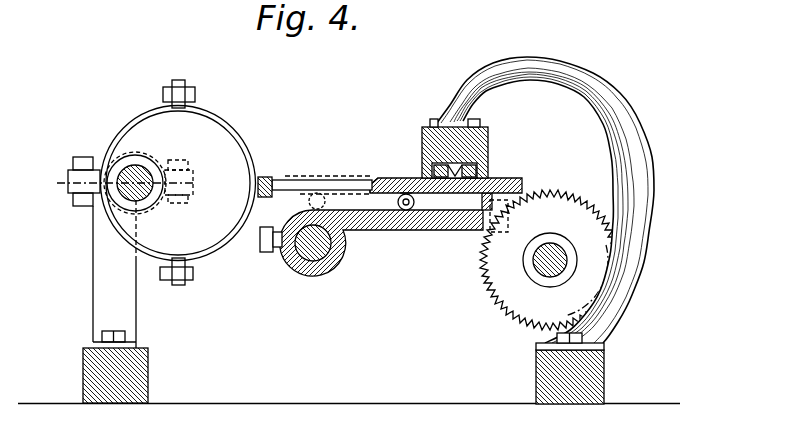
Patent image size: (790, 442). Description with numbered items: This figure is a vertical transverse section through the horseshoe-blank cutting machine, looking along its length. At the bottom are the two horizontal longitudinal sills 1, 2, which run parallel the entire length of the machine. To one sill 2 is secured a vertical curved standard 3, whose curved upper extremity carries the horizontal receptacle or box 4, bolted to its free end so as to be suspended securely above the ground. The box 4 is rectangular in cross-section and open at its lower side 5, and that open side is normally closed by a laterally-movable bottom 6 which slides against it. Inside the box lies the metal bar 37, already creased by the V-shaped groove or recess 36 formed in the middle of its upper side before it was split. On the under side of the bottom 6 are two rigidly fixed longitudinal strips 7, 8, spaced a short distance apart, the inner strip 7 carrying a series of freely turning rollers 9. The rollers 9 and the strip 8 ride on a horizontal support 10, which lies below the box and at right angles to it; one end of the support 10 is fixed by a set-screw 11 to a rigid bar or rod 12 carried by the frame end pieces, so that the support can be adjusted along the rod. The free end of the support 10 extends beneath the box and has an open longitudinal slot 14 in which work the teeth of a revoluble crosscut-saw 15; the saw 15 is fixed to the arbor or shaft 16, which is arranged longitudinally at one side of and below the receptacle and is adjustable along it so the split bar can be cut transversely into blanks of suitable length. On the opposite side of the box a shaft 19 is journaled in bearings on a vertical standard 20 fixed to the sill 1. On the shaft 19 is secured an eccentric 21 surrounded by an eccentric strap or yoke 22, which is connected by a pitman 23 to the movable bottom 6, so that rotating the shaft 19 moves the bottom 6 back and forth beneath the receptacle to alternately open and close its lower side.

The horizontal longitudinal sill 1 is at (83, 378).
The horizontal longitudinal sill 2 is at (536, 375).
The vertical curved standard 3 is at (545, 200).
The receptacle or box 4 is at (422, 134).
The open lower side of the receptacle 5 is at (490, 178).
The laterally-movable bottom 6 is at (382, 180).
The inner longitudinal strip 7 is at (410, 194).
The longitudinal strip 8 is at (482, 203).
The roller 9 is at (398, 203).
The horizontal support 10 is at (381, 243).
The set-screw 11 is at (265, 260).
The rigid bar or rod 12 is at (321, 256).
The open longitudinal slot 14 is at (490, 230).
The crosscut-saw 15 is at (550, 260).
The arbor or shaft 16 is at (553, 254).
The shaft 19 is at (128, 173).
The vertical standard 20 is at (110, 181).
The eccentric 21 is at (195, 181).
The eccentric strap or yoke 22 is at (248, 150).
The pitman 23 is at (292, 182).
The longitudinal groove or recess 36 is at (446, 166).
The bar 37 is at (432, 171).